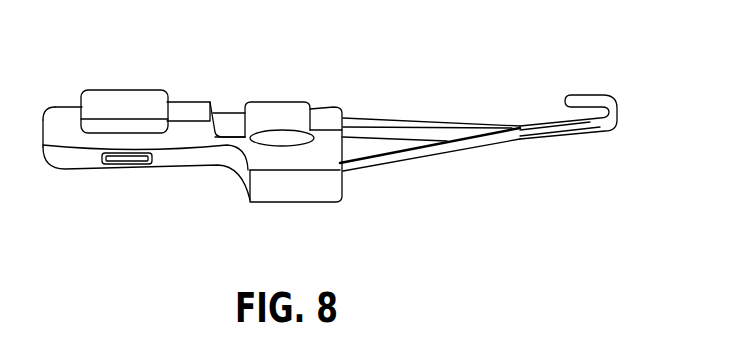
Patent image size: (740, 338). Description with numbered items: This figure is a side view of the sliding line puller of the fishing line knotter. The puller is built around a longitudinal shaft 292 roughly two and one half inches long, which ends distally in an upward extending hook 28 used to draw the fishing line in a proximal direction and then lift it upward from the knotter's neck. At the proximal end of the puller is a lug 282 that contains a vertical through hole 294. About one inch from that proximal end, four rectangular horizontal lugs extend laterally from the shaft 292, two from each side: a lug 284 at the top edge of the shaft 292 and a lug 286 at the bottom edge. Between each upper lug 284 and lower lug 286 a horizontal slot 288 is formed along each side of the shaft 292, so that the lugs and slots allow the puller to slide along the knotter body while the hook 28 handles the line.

The hook 28 is at (610, 96).
The lug 282 is at (70, 163).
The lugs 284 is at (325, 114).
The lugs 286 is at (302, 163).
The horizontal slot 288 is at (290, 139).
The longitudinal shaft 292 is at (216, 114).
The vertical through hole 294 is at (137, 164).